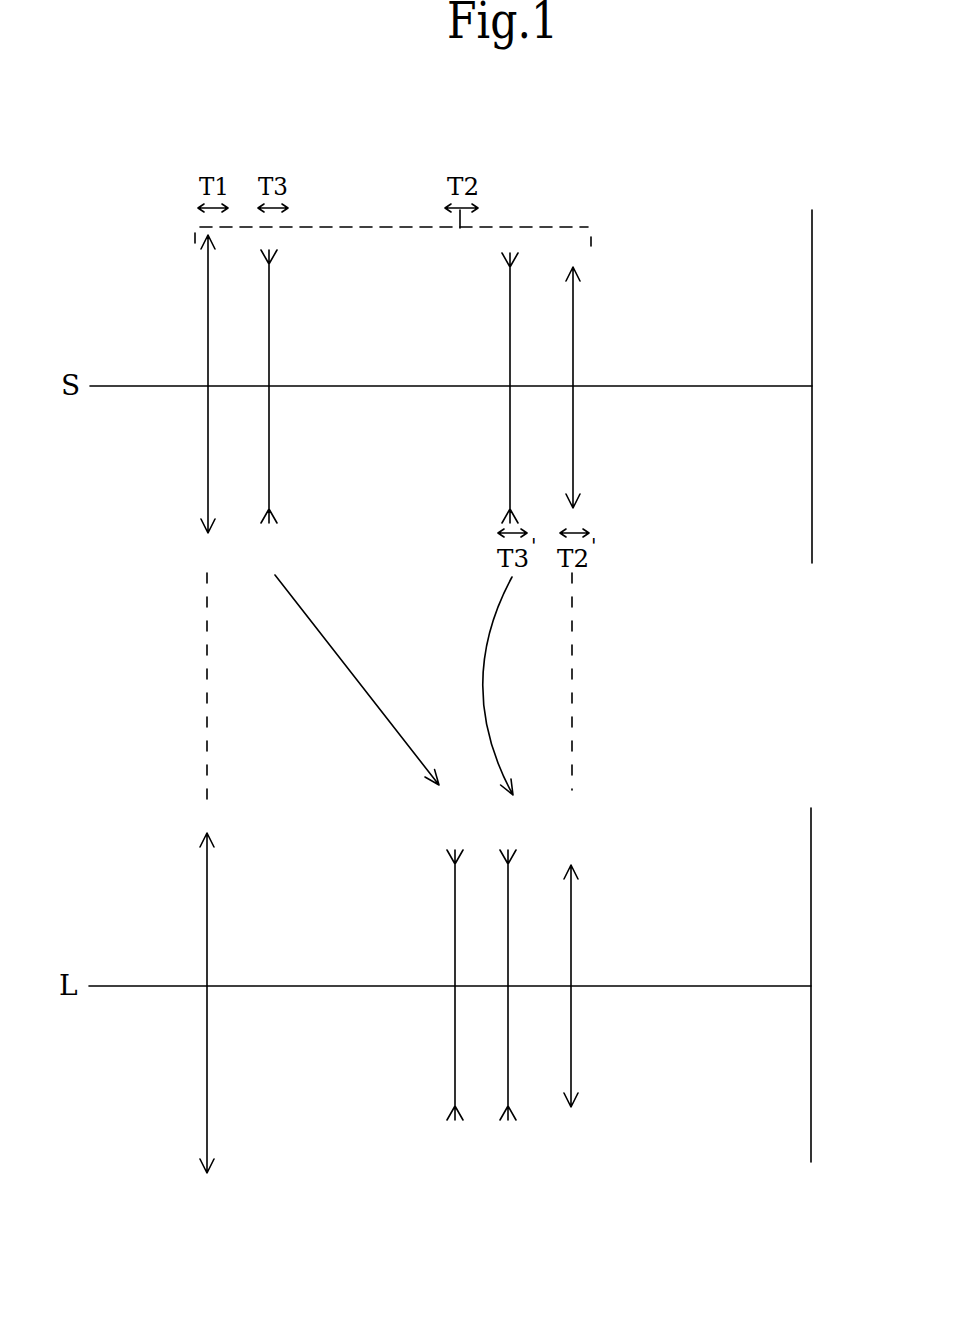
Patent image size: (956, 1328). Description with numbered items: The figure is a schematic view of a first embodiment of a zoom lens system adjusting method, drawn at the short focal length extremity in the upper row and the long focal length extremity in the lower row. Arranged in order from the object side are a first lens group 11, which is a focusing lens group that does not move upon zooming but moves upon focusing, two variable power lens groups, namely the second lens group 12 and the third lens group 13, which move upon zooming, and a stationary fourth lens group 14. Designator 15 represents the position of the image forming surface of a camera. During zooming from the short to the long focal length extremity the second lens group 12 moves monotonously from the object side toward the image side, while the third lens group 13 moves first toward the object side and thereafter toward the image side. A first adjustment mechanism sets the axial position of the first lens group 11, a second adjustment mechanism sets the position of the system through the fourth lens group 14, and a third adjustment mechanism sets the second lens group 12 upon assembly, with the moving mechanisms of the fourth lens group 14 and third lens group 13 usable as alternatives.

The first lens group 11 is at (207, 457).
The second lens group 12 is at (270, 457).
The third lens group 13 is at (508, 457).
The fourth lens group 14 is at (574, 457).
The position of an image forming surface 15 is at (813, 457).